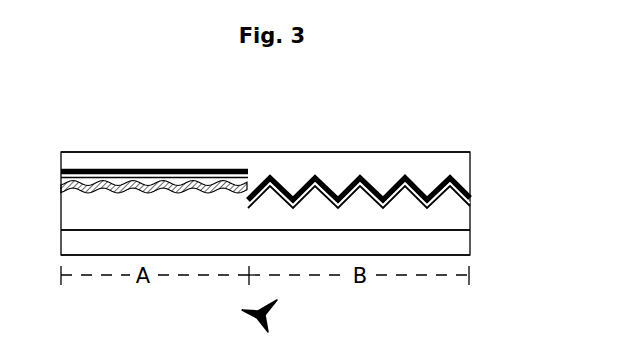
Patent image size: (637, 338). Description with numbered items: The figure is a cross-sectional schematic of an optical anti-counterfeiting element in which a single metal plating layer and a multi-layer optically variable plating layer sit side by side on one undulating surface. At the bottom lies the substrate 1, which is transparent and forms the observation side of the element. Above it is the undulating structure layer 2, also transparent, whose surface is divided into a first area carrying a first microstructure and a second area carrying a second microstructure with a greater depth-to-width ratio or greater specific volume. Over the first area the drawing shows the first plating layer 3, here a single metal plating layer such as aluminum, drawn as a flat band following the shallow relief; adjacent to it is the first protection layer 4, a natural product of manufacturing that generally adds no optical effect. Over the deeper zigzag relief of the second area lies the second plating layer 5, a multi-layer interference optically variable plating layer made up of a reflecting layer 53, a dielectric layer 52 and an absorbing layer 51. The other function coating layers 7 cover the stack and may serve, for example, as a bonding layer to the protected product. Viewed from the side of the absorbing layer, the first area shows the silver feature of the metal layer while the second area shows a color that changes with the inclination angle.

The substrate 1 is at (452, 243).
The undulating structure layer 2 is at (452, 207).
The first plating layer 3 is at (63, 190).
The first protection layer 4 is at (63, 181).
The second plating layer 5 is at (353, 146).
The absorbing layer 51 is at (312, 175).
The dielectric layer 52 is at (306, 186).
The reflecting layer 53 is at (293, 189).
The other function coating layers 7 is at (452, 162).